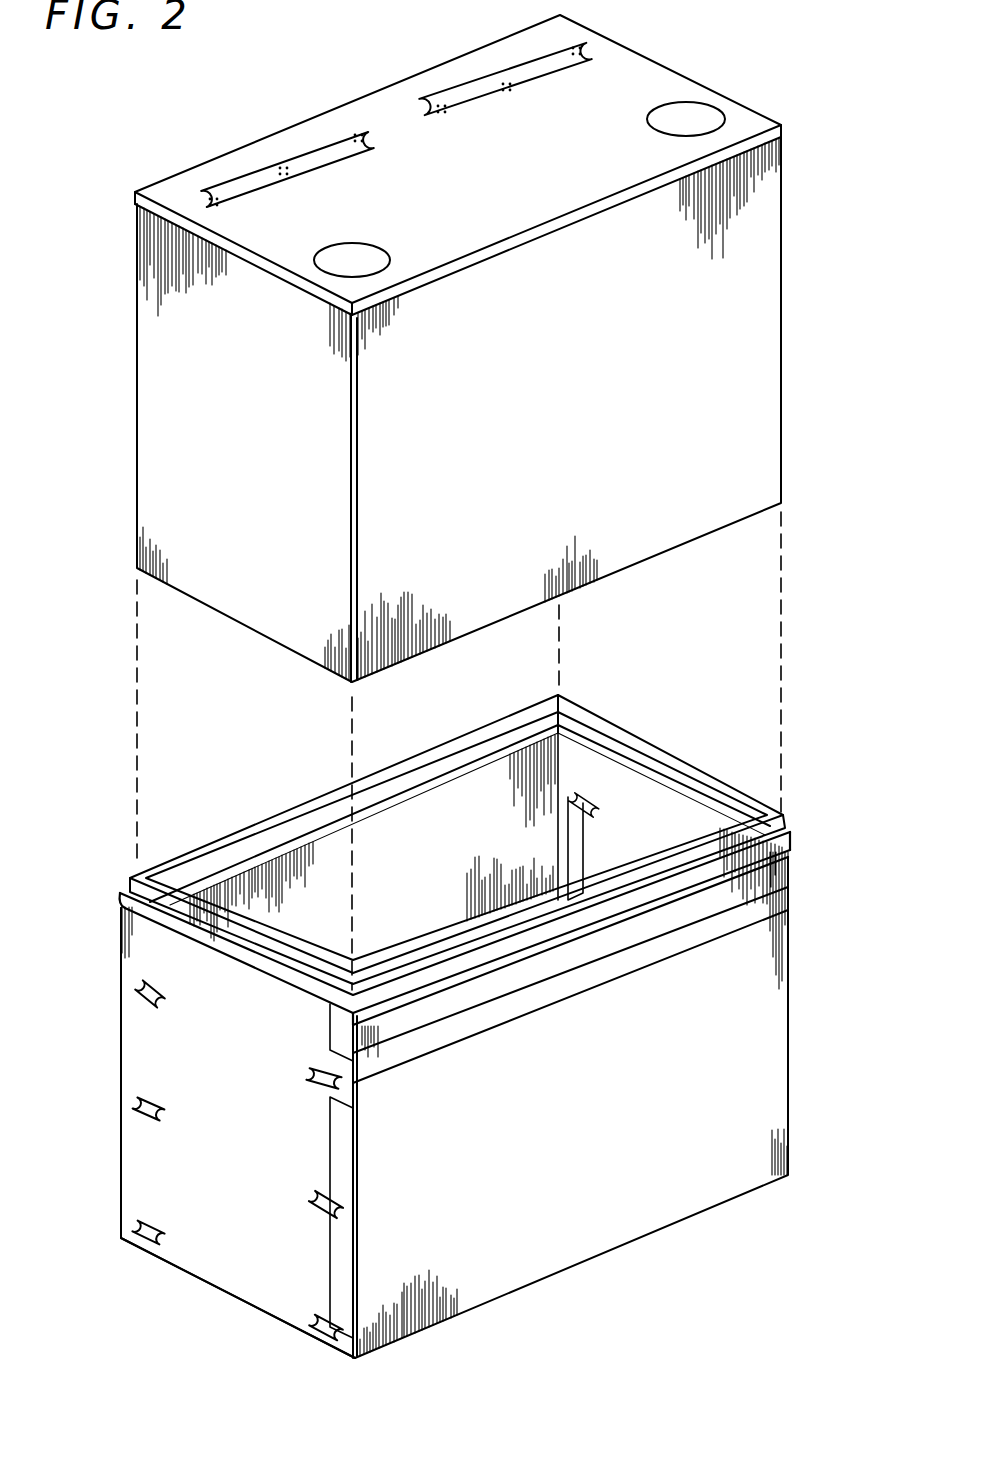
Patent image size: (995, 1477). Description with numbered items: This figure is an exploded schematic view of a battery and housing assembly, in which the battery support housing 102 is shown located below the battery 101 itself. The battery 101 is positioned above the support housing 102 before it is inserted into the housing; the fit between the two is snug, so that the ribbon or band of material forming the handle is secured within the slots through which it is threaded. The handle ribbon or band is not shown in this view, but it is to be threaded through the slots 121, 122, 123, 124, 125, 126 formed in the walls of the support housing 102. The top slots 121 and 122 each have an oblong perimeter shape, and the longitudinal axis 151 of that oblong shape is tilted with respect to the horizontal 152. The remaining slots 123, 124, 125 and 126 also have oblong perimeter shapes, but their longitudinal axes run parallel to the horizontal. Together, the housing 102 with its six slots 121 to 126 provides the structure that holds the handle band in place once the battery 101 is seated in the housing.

The battery 101 is at (815, 308).
The battery support housing 102 is at (433, 1026).
The slot 121 is at (192, 1027).
The slot 122 is at (305, 1073).
The slot 123 is at (190, 1135).
The slot 124 is at (311, 1196).
The slot 125 is at (184, 1228).
The slot 126 is at (298, 1294).
The longitudinal axis 151 is at (121, 946).
The horizontal 152 is at (90, 1029).